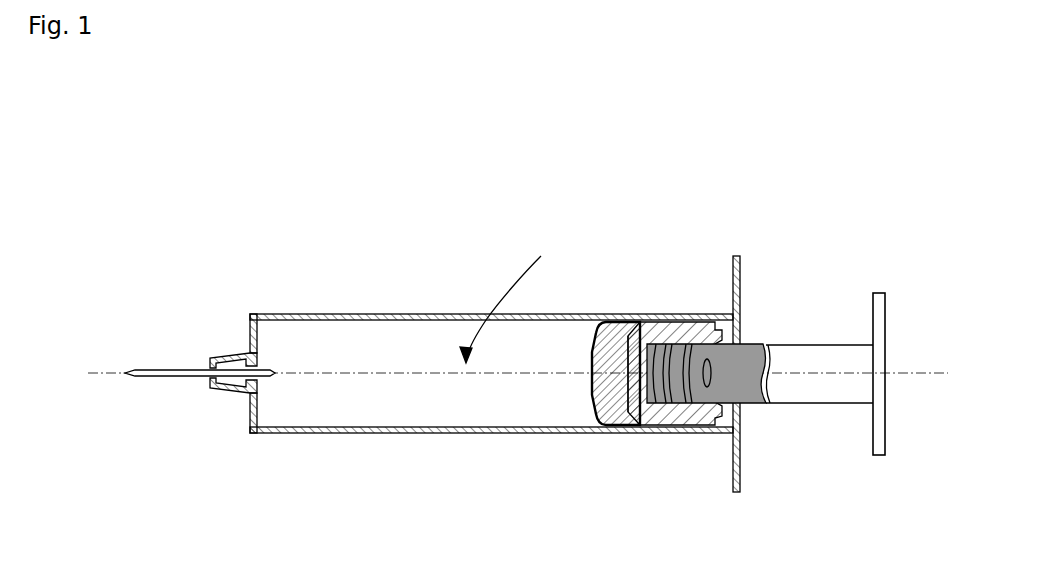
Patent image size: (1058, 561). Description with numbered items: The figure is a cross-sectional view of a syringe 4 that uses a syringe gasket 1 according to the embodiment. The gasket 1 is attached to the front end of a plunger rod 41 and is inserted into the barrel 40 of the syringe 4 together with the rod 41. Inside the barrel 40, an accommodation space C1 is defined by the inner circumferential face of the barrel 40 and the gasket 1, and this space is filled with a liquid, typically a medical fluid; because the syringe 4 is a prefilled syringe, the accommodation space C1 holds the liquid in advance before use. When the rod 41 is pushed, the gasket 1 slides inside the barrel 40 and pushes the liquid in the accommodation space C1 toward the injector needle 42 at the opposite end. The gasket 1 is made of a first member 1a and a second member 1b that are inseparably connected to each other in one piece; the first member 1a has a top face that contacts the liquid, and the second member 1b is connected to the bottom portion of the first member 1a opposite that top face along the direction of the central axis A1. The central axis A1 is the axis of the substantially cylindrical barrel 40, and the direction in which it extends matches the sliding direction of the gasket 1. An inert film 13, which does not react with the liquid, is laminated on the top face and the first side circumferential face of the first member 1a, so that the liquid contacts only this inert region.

The syringe 4 is at (107, 161).
The barrel 40 is at (347, 314).
The injector needle 42 is at (138, 376).
The inert film 13 is at (590, 345).
The syringe gasket 1 is at (648, 310).
The first member 1a is at (614, 322).
The second member 1b is at (672, 320).
The plunger rod 41 is at (755, 397).
The central axis A1 is at (504, 375).
The accommodation space C1 is at (515, 298).